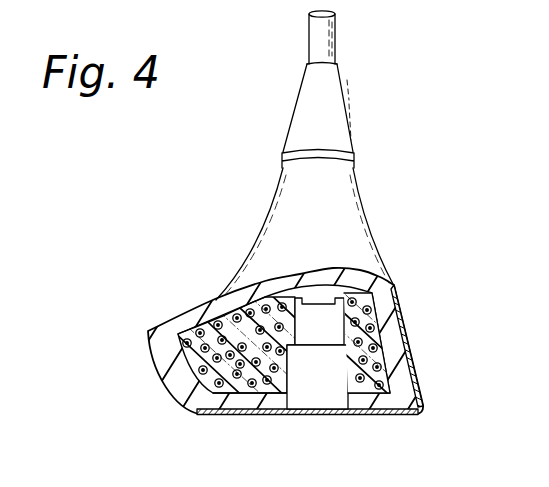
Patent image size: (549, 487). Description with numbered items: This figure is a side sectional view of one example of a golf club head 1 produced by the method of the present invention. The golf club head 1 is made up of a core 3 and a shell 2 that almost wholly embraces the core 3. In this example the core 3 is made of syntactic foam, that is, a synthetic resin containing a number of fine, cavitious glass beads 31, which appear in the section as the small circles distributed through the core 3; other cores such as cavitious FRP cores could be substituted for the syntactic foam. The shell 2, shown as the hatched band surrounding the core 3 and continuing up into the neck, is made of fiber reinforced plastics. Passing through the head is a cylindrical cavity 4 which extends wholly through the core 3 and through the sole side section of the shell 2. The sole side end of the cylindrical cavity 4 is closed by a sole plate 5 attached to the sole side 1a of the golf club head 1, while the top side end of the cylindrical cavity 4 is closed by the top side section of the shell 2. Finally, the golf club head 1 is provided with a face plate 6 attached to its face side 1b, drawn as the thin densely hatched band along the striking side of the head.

The golf club head 1 is at (265, 206).
The sole side 1a is at (217, 413).
The face side 1b is at (404, 305).
The shell 2 is at (222, 300).
The core 3 is at (268, 412).
The cylindrical cavity 4 is at (320, 390).
The sole plate 5 is at (380, 413).
The face plate 6 is at (416, 368).
The cavitious glass beads 31 is at (200, 368).